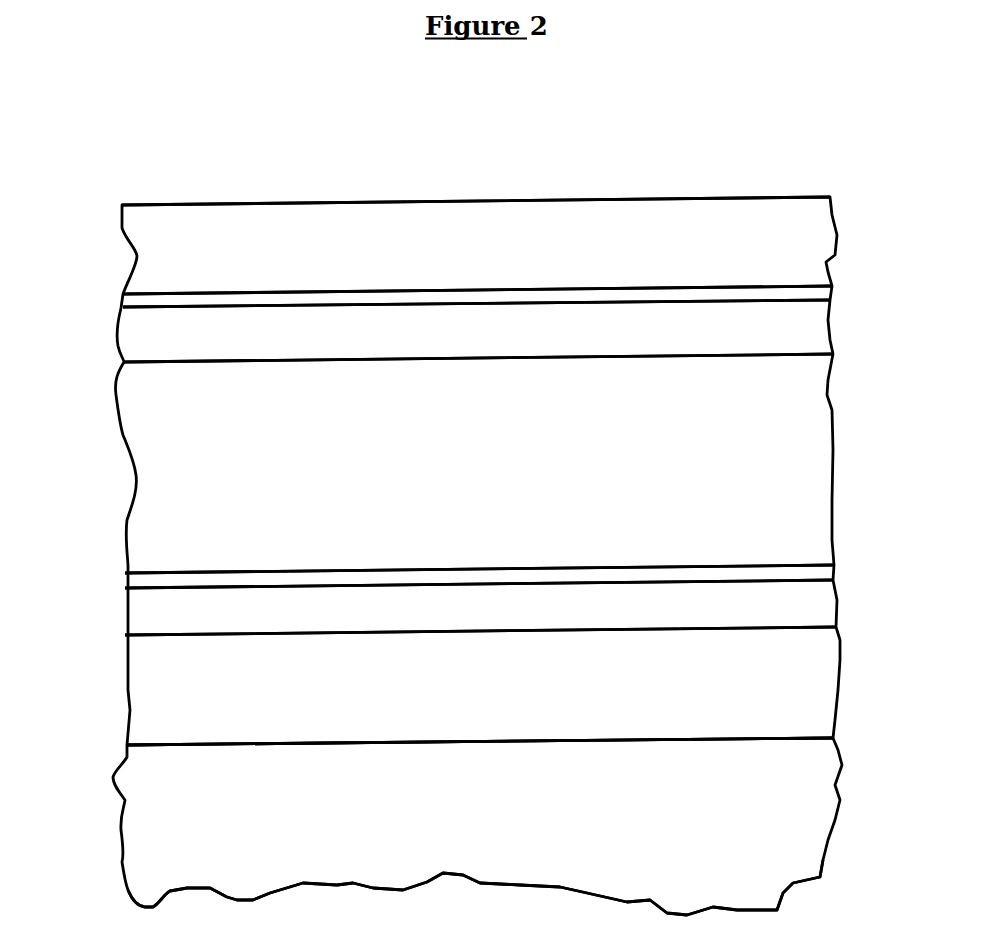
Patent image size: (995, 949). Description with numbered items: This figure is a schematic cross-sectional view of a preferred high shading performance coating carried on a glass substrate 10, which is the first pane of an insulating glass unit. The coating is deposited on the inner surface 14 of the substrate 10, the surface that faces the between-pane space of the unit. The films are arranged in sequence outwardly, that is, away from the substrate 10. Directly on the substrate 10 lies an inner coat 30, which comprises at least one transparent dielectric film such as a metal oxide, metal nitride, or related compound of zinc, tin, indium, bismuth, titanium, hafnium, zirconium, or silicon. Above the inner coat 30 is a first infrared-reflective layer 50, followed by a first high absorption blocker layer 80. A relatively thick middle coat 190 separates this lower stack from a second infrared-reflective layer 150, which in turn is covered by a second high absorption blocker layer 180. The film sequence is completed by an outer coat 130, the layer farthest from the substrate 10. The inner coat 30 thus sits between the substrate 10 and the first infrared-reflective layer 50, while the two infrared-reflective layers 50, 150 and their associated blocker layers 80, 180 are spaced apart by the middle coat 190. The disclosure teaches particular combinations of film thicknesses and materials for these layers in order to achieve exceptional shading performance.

The substrate 10 is at (488, 822).
The inner surface 14 is at (207, 745).
The inner coat 30 is at (493, 698).
The first infrared-reflective layer 50 is at (494, 621).
The first high absorption blocker layer 80 is at (834, 572).
The middle coat 190 is at (501, 486).
The second infrared-reflective layer 150 is at (501, 345).
The second high absorption blocker layer 180 is at (832, 292).
The outer coat 130 is at (501, 266).